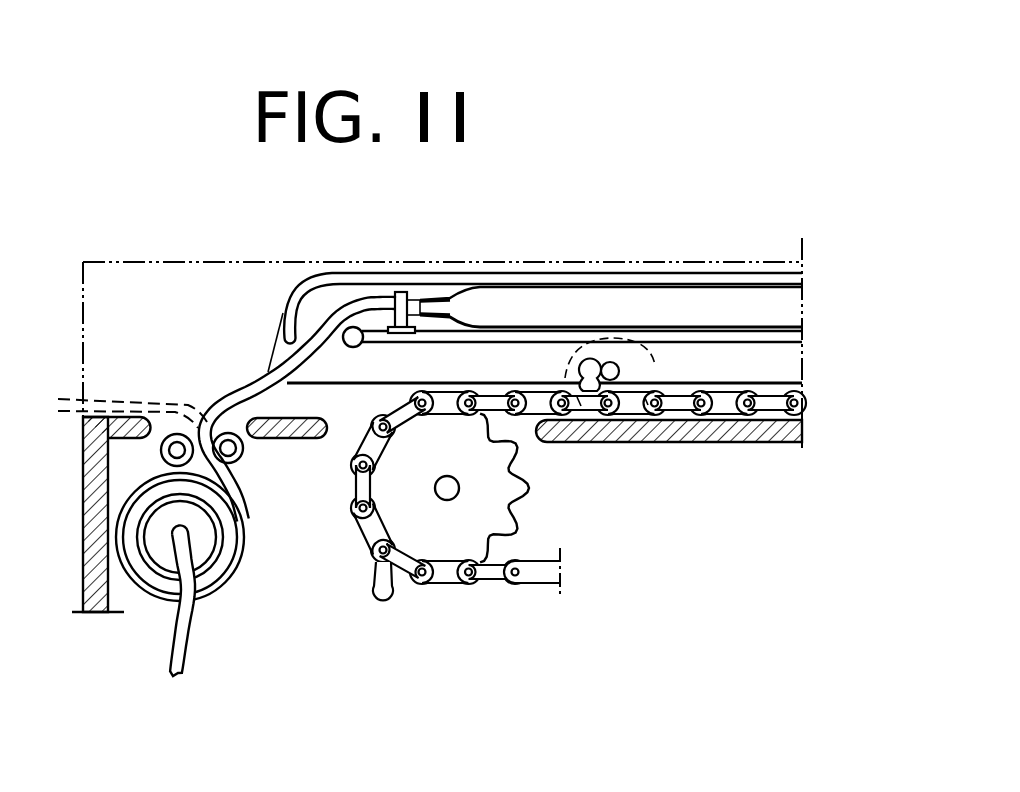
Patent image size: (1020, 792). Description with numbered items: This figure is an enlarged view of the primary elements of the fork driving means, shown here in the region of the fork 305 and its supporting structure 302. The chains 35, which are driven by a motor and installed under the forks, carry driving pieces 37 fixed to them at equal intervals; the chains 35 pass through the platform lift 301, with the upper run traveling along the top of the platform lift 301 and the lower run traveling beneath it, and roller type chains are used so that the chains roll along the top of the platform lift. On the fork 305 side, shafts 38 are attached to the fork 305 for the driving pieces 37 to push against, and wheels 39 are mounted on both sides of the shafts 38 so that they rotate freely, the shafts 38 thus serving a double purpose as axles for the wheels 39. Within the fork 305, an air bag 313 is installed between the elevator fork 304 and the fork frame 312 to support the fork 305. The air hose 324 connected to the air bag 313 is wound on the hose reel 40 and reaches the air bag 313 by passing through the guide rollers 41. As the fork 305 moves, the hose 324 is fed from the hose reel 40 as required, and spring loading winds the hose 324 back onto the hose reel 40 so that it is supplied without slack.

The ink ribbon cassette 302 is at (519, 251).
The elevator fork 304 is at (358, 273).
The fork 305 is at (810, 326).
The air bag 313 is at (650, 300).
The fork frame 312 is at (424, 340).
The air hose 324 is at (247, 393).
The guide rollers 41 is at (179, 424).
The hose reel 40 is at (217, 583).
The platform lift 301 is at (753, 445).
The chains 35 is at (490, 578).
The driving pieces 37 is at (586, 390).
The shafts 38 is at (608, 382).
The wheels 39 is at (653, 350).